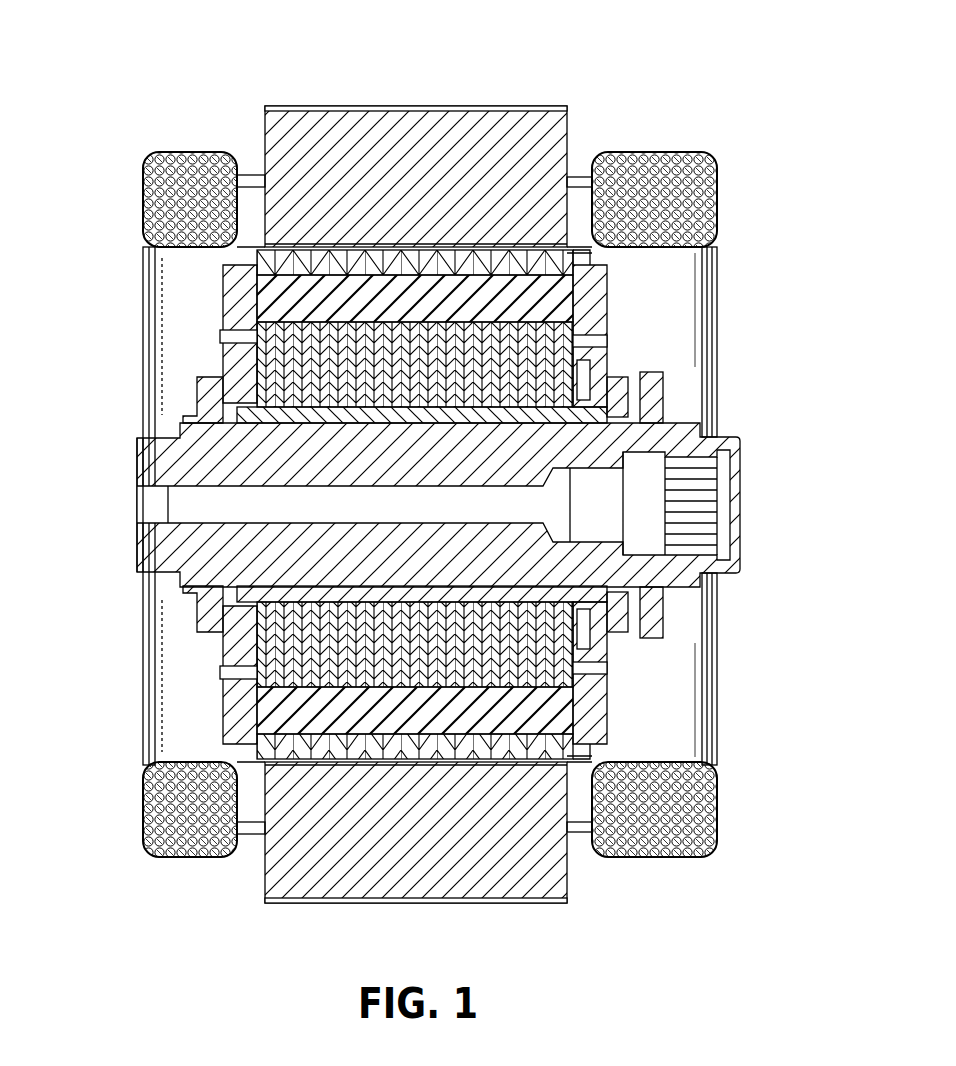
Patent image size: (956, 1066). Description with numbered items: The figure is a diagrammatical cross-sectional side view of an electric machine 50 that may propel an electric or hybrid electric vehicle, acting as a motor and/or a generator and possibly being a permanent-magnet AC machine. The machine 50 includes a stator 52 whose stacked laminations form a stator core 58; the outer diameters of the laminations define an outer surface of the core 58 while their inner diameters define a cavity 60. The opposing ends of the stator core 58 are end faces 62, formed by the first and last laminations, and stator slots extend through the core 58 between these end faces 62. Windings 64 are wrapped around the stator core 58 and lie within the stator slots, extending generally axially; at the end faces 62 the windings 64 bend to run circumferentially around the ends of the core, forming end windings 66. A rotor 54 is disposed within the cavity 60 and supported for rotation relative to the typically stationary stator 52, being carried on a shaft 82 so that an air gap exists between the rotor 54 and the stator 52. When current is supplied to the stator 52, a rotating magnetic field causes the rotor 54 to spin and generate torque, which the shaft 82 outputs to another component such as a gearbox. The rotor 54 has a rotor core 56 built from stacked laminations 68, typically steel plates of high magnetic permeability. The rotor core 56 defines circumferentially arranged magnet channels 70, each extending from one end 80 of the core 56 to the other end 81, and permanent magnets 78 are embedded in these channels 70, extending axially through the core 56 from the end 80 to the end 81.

The electric machine 50 is at (222, 62).
The stator 52 is at (413, 137).
The rotor 54 is at (520, 296).
The rotor core 56 is at (530, 657).
The stator core 58 is at (540, 123).
The cavity 60 is at (195, 298).
The end faces 62 is at (265, 138).
The windings 64 is at (695, 162).
The end windings 66 is at (710, 272).
The stacked laminations 68 is at (258, 640).
The magnet channels 70 is at (482, 738).
The permanent magnets 78 is at (408, 705).
The end of the rotor core 80 is at (245, 680).
The other end of the rotor core 81 is at (577, 622).
The shaft 82 is at (728, 440).